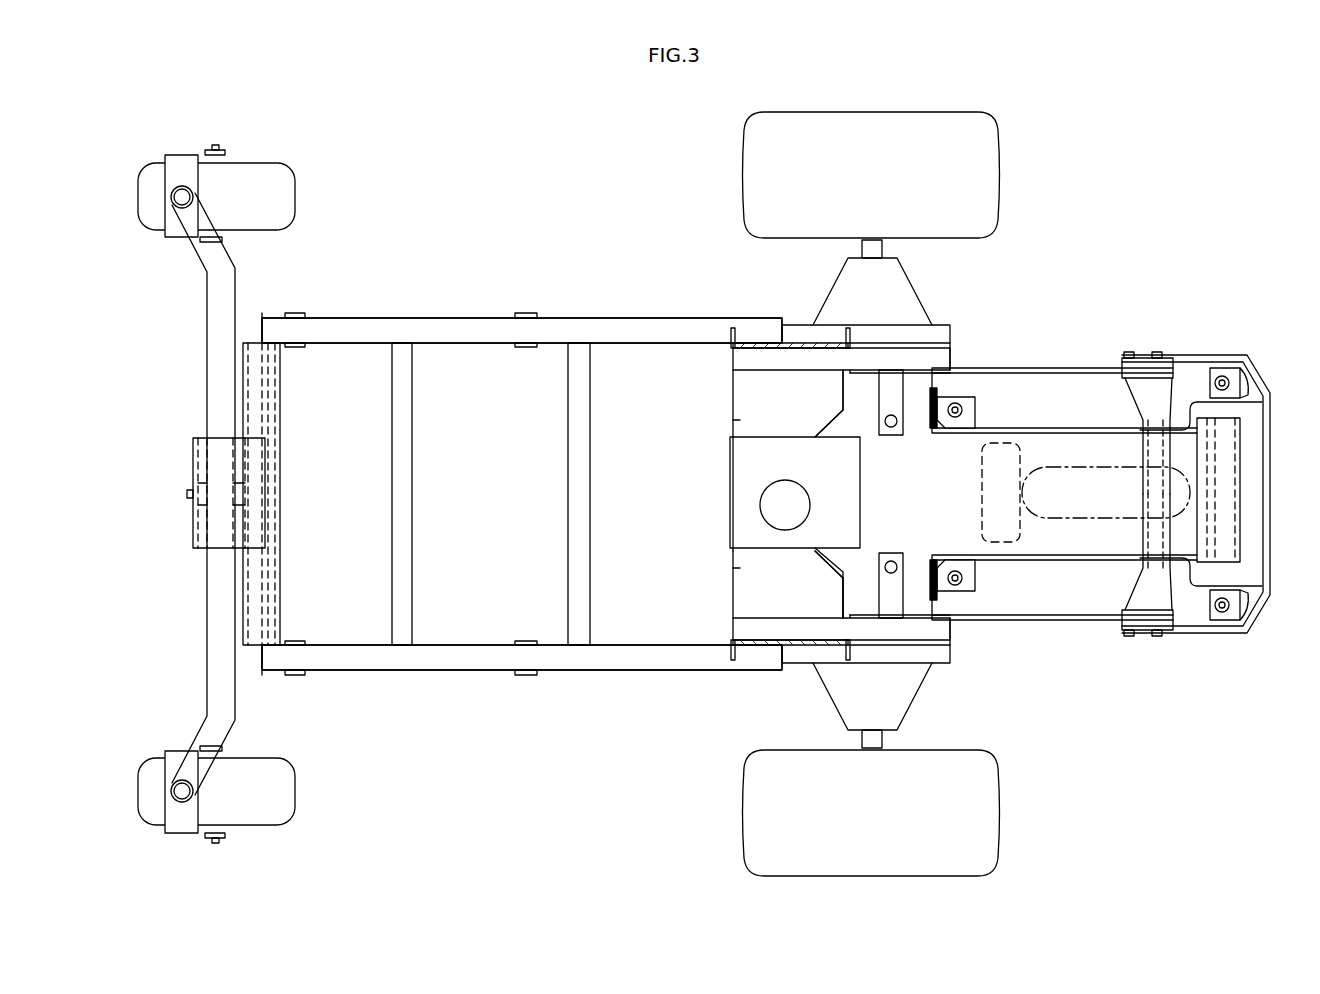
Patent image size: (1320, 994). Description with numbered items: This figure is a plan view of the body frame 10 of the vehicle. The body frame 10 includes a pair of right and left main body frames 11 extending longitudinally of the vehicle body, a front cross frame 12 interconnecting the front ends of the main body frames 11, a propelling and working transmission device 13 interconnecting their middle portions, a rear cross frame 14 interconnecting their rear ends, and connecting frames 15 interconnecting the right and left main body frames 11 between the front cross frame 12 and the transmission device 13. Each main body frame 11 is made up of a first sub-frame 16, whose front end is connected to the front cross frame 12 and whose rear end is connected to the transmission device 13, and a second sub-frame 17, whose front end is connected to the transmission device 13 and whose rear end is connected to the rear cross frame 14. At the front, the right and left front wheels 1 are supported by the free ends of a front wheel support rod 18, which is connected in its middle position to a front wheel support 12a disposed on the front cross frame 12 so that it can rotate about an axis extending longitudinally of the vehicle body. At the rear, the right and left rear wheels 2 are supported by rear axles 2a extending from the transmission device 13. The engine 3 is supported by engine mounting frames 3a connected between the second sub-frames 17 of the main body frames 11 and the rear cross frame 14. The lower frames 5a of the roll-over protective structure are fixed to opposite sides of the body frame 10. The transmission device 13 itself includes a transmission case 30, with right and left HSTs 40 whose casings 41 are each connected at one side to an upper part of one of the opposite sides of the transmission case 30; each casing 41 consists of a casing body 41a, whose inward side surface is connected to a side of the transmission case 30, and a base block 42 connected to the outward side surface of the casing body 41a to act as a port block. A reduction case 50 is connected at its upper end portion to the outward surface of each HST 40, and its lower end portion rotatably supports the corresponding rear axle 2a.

The front wheel 1 is at (297, 200).
The rear wheel 2 is at (990, 172).
The rear axle 2a is at (880, 250).
The engine 3 is at (980, 497).
The engine mounting frame 3a is at (1076, 425).
The lower frame 5a is at (753, 340).
The body frame 10 is at (628, 304).
The main body frame 11 is at (522, 494).
The front cross frame 12 is at (280, 500).
The front wheel support 12a is at (193, 470).
The propelling and working transmission device 13 is at (711, 493).
The rear cross frame 14 is at (1210, 353).
The connecting frame 15 is at (398, 430).
The first sub-frame 16 is at (436, 330).
The second sub-frame 17 is at (1037, 366).
The front wheel support rod 18 is at (207, 332).
The transmission case 30 is at (853, 492).
The HST 40 is at (727, 434).
The casing 41 is at (748, 417).
The casing body 41a is at (829, 494).
The base block 42 is at (740, 360).
The reduction case 50 is at (802, 335).